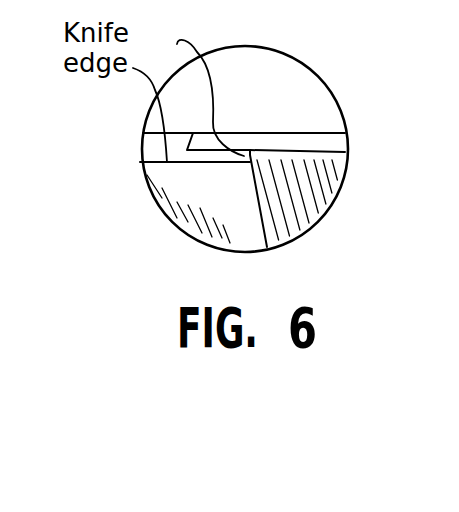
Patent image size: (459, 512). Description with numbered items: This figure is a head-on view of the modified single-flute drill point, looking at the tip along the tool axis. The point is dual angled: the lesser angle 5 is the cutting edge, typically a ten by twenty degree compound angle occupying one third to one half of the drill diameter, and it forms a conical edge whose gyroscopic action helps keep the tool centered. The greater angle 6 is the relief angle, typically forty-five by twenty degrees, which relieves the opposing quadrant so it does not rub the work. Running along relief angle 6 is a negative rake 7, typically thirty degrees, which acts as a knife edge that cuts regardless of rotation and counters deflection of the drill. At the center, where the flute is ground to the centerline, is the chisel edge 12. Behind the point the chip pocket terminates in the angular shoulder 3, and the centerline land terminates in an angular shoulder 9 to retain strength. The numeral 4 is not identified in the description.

The angular shoulder 3 is at (248, 87).
The chisel edge 12 is at (198, 90).
The lesser angle 5 is at (300, 148).
The negative rake angle 7 is at (148, 141).
The angular shoulder 9 is at (333, 142).
The greater angle 6 is at (177, 202).
The element 4 (partial, adjacent figure) 4 is at (32, 510).